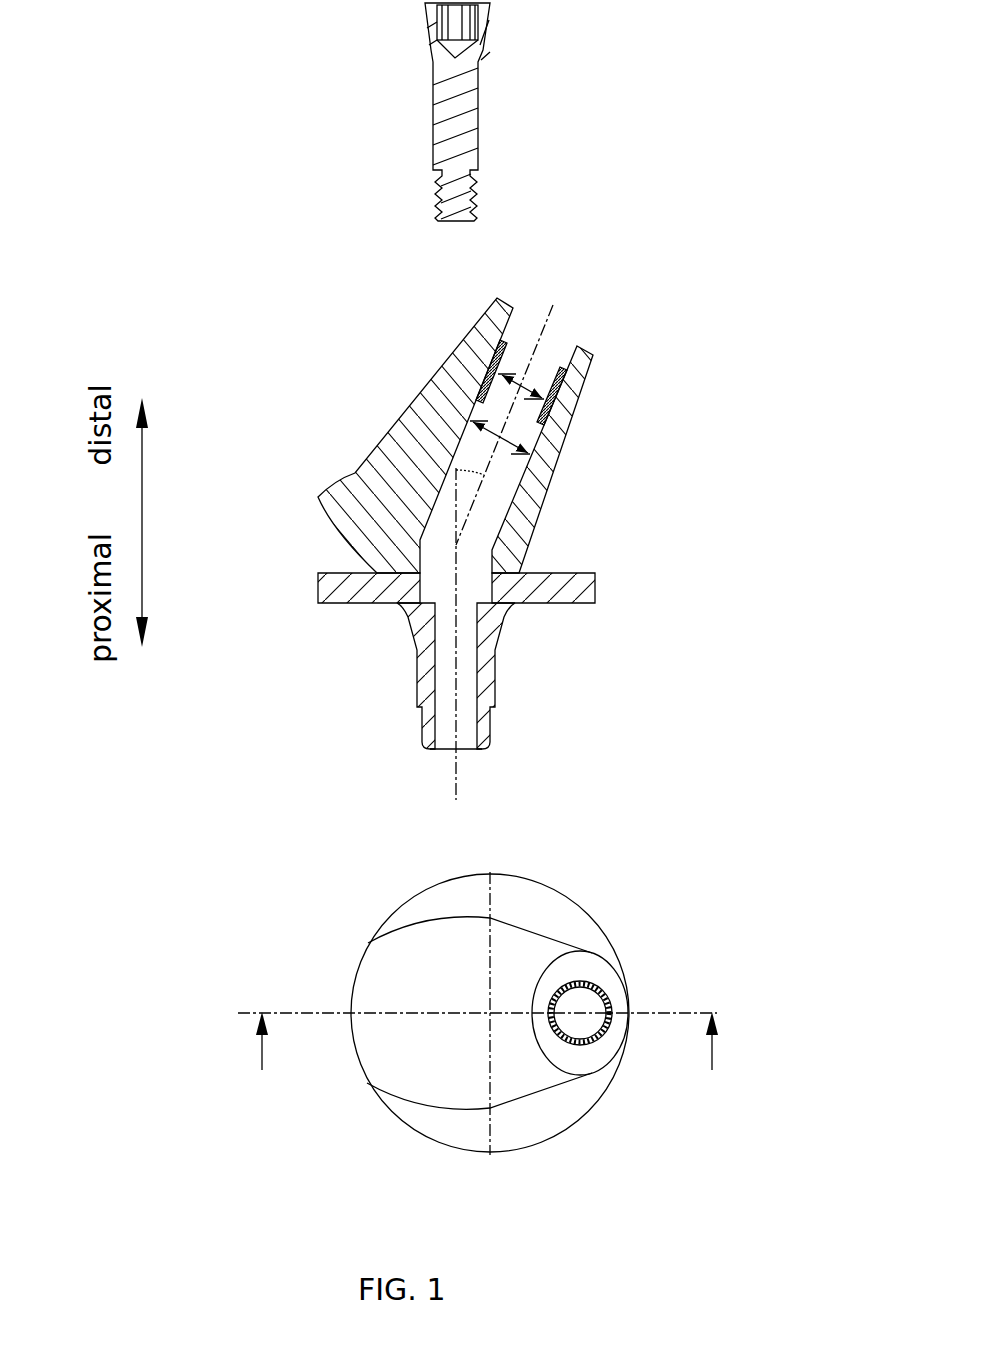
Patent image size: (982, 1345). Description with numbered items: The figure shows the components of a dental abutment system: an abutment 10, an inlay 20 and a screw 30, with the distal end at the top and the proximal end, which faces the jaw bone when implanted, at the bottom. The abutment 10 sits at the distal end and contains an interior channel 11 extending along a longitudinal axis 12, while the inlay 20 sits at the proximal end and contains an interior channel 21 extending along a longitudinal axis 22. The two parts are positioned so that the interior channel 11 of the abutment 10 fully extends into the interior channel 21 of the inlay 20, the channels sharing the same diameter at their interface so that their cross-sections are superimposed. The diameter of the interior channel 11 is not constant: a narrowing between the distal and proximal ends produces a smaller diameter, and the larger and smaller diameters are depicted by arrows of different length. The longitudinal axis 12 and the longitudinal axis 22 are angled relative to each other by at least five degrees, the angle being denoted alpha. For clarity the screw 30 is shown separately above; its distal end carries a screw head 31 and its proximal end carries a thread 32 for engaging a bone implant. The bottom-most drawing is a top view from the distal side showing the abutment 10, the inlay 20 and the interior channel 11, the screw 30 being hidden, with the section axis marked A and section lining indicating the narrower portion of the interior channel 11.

The abutment 10 is at (487, 676).
The interior channel 11 is at (569, 644).
The longitudinal axis 12 is at (535, 353).
The inlay 20 is at (483, 864).
The interior channel 21 is at (467, 728).
The longitudinal axis 22 is at (455, 777).
The screw 30 is at (463, 112).
The screw head 31 is at (488, 20).
The thread 32 is at (438, 203).